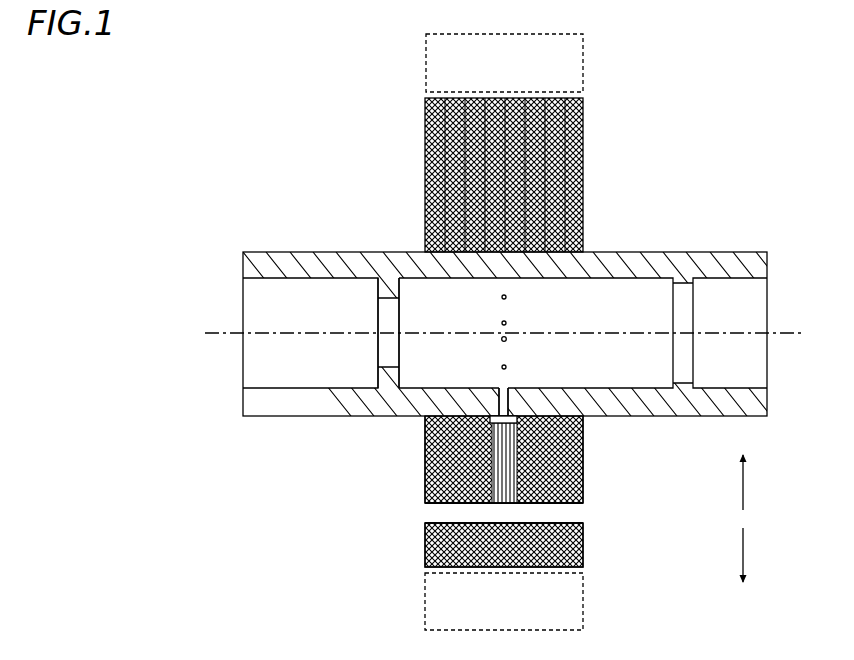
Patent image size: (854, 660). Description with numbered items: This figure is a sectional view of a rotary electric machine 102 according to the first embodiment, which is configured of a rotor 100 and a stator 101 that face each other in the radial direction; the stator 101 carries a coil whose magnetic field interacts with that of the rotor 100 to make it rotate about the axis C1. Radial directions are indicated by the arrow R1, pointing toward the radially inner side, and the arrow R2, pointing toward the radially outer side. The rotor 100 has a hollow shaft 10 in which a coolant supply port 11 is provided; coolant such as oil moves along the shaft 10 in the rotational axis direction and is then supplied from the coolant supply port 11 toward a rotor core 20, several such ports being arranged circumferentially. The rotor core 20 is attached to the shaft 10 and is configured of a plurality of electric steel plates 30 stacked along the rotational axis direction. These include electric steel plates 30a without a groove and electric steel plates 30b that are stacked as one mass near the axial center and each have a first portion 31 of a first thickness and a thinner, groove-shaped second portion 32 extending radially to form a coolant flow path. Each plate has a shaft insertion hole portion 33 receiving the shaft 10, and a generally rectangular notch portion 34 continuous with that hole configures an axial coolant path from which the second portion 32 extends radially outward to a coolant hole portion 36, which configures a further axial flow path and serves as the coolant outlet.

The rotor 100 is at (250, 133).
The stator 101 is at (583, 70).
The rotary electric machine 102 is at (160, 78).
The shaft 10 is at (305, 252).
The coolant supply port 11 is at (499, 390).
The rotor core 20 is at (425, 148).
The electric steel plate 30 is at (505, 523).
The electric steel plate 30a is at (437, 572).
The electric steel plate 30b is at (500, 570).
The first portion 31 is at (510, 520).
The second portion 32 is at (510, 505).
The shaft insertion hole portion 33 is at (437, 416).
The notch portion 34 is at (515, 405).
The coolant hole portion 36 is at (447, 503).
The axis C1 is at (222, 333).
The arrow R1 is at (722, 482).
The arrow R2 is at (722, 555).